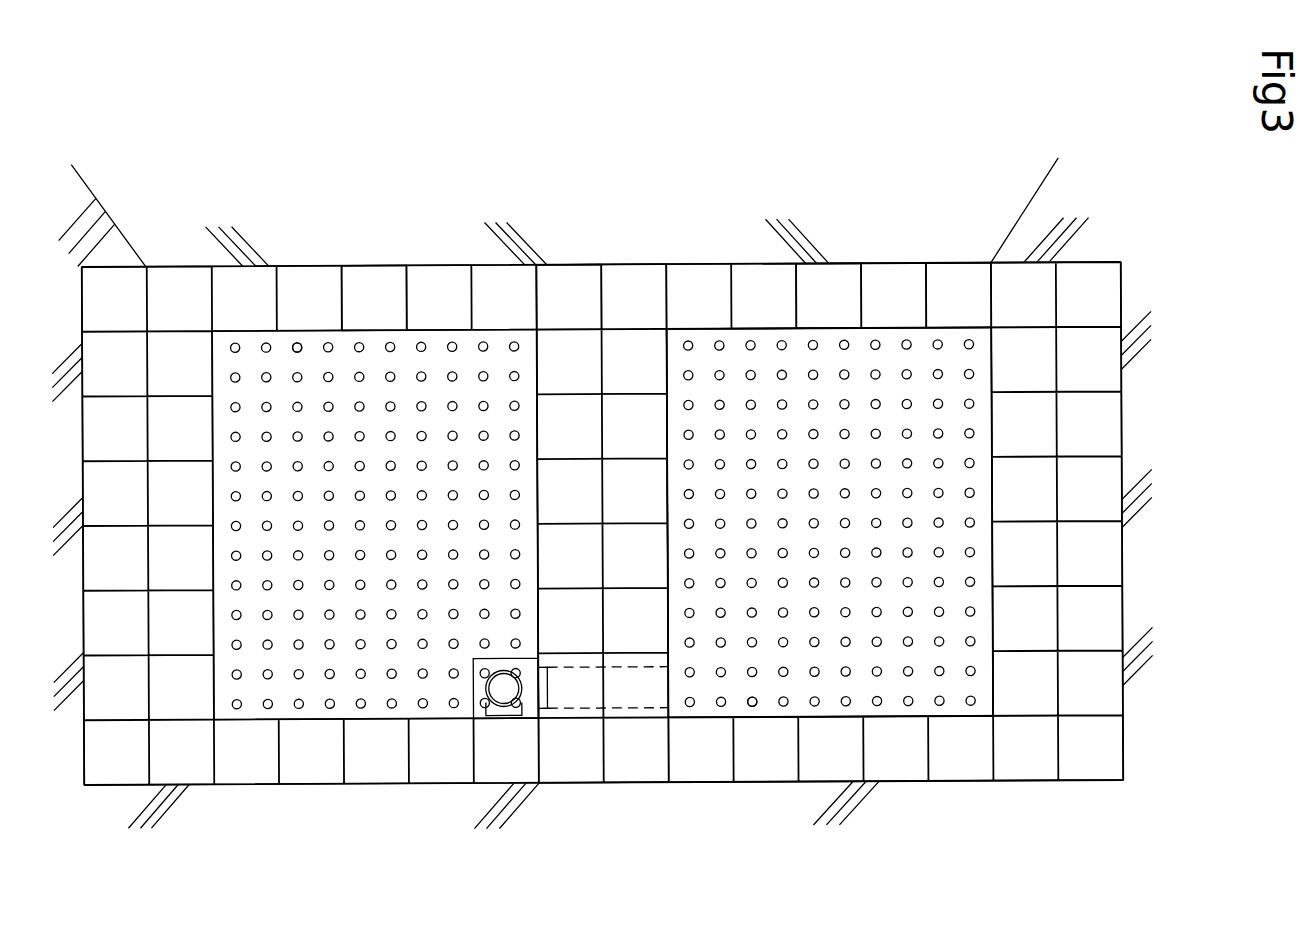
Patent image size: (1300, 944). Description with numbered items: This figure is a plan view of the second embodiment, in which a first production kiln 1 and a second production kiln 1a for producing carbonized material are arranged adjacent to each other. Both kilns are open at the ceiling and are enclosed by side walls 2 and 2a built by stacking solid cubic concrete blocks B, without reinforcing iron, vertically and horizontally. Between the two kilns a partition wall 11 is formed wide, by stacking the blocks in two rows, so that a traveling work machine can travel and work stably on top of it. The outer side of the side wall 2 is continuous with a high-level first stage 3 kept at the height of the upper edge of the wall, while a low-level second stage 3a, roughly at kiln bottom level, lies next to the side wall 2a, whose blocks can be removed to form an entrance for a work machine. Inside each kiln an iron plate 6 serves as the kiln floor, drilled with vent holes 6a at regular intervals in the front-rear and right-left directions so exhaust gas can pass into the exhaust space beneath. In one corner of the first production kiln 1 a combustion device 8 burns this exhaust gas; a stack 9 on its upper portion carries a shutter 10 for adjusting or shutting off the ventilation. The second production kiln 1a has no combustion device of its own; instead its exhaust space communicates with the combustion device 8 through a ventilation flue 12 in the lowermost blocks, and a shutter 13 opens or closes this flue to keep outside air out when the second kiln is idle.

The carbonized material production kiln 1 is at (433, 348).
The second production kiln 1a is at (884, 349).
The side wall 2 is at (1080, 567).
The side wall 2a is at (370, 296).
The first stage 3 is at (184, 857).
The second stage 3a is at (793, 163).
The iron plate 6 is at (287, 690).
The vent hole 6a is at (298, 341).
The combustion device 8 is at (530, 687).
The stack 9 is at (485, 697).
The shutter 10 is at (503, 713).
The partition wall 11 is at (629, 347).
The ventilation flue 12 is at (637, 682).
The shutter 13 is at (546, 692).
The block B is at (563, 298).